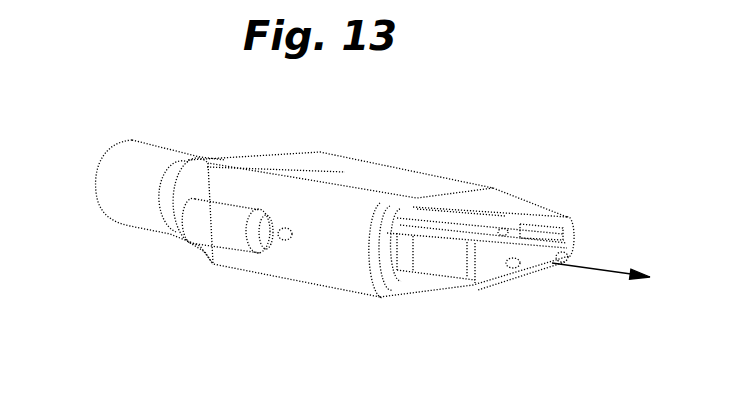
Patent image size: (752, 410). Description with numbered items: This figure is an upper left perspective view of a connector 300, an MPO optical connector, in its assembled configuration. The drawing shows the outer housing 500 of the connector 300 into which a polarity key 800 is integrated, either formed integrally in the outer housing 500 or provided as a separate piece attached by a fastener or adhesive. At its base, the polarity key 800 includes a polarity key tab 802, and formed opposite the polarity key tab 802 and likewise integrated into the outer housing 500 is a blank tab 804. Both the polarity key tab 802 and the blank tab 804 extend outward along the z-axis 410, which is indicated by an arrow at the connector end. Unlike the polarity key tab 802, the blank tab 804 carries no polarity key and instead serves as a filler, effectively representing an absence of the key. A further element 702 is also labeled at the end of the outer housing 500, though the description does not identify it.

The connector 300 is at (487, 120).
The outer housing 500 is at (347, 173).
The polarity key 800 is at (503, 231).
The polarity key tab 802 is at (520, 233).
The blank tab 804 is at (515, 285).
The contact 702 is at (546, 278).
The z-axis 410 is at (617, 295).